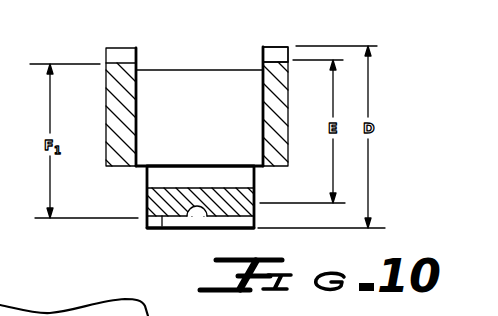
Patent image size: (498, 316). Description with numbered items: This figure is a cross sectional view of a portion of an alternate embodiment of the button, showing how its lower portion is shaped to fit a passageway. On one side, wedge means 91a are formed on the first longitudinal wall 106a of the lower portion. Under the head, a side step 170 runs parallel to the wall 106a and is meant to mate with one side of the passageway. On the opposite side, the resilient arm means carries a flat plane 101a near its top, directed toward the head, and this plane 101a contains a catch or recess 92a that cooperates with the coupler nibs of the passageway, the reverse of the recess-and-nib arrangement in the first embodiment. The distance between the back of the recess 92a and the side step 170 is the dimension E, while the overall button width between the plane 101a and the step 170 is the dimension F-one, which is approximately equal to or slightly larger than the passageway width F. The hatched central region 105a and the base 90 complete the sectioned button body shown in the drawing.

The wedge means 91a is at (122, 55).
The side step 170 is at (276, 54).
The first longitudinal wall 106a is at (218, 69).
The plate 105a is at (213, 123).
The base block 90 is at (172, 210).
The flat plane 101a is at (160, 229).
The catch or recess 92a is at (198, 207).